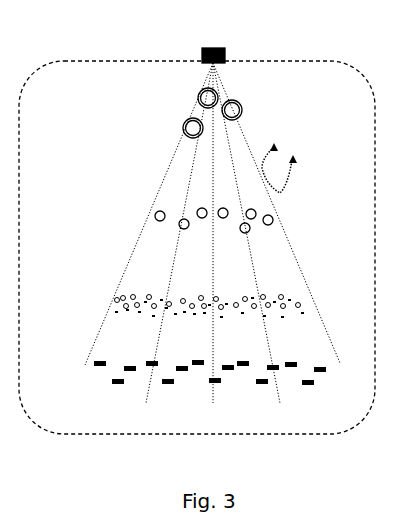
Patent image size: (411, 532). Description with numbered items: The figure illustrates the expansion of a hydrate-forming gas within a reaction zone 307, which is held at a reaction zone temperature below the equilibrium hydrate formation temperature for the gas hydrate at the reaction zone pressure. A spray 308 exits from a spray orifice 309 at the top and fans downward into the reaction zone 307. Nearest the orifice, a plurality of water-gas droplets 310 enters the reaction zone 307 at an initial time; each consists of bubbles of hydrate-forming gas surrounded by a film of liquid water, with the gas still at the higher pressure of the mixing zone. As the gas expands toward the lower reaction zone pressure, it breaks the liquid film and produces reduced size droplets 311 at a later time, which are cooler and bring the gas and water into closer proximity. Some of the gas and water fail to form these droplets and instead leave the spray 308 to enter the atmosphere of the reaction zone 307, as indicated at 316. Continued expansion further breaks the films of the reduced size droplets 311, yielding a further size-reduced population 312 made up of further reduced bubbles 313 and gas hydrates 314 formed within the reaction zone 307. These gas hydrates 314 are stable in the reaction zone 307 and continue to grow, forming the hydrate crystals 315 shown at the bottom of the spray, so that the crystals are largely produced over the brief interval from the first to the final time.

The reaction zone 307 is at (341, 63).
The spray 308 is at (135, 173).
The spray orifice 309 is at (225, 53).
The water-gas droplets 310 is at (180, 108).
The reduced size droplets 311 is at (135, 223).
The further size-reduced population 312 is at (95, 307).
The further reduced bubbles 313 is at (283, 295).
The gas hydrates 314 is at (303, 313).
The hydrate crystals 315 is at (95, 377).
The escaping gas and water 316 is at (303, 182).